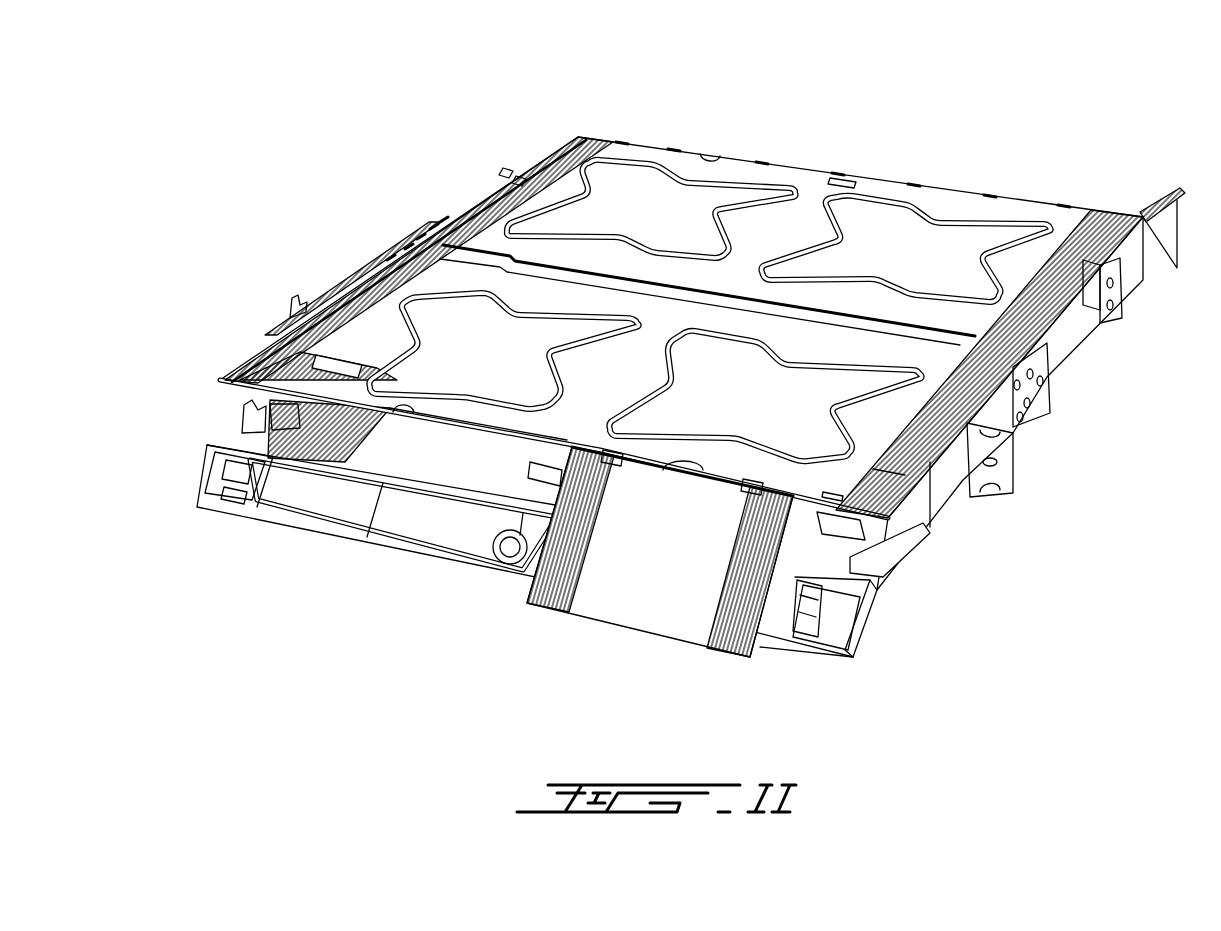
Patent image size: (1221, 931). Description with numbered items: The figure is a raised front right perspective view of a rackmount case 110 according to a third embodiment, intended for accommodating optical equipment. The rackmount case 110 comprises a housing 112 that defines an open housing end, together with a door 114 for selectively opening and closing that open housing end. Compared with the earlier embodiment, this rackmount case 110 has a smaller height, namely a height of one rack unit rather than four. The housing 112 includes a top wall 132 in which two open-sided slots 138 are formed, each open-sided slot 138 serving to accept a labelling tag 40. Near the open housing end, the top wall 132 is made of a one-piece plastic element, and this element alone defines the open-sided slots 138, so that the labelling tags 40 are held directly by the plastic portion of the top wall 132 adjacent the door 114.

The rackmount case 110 is at (290, 173).
The housing 112 is at (472, 198).
The labelling tag 40 is at (394, 410).
The open-sided slots 138 is at (388, 382).
The top wall 132 is at (873, 469).
The door 114 is at (867, 630).